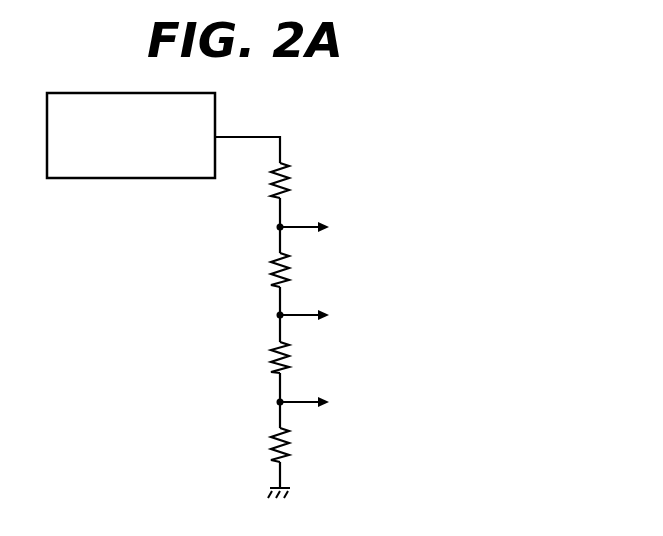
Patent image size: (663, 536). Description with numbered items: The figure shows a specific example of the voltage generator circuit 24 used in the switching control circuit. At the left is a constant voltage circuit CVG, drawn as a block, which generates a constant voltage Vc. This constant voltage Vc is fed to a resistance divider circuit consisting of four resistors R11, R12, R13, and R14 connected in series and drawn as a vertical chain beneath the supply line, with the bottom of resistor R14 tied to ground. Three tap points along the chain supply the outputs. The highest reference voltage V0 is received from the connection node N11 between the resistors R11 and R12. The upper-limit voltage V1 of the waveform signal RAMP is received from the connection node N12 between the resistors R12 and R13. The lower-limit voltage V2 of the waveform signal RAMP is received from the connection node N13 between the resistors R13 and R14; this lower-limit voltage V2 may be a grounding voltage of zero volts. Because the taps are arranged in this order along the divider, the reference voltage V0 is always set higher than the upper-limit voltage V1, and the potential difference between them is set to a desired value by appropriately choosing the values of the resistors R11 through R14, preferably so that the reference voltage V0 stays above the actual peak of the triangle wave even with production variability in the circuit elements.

The voltage generator circuit 24 is at (324, 134).
The constant voltage circuit CVG is at (147, 179).
The constant voltage Vc is at (247, 135).
The resistor R11 is at (302, 180).
The resistor R12 is at (302, 270).
The resistor R13 is at (302, 356).
The resistor R14 is at (304, 445).
The connection node N11 is at (277, 227).
The connection node N12 is at (277, 315).
The connection node N13 is at (277, 402).
The reference voltage V0 is at (321, 228).
The upper-limit voltage V1 is at (321, 316).
The lower-limit voltage V2 is at (321, 403).